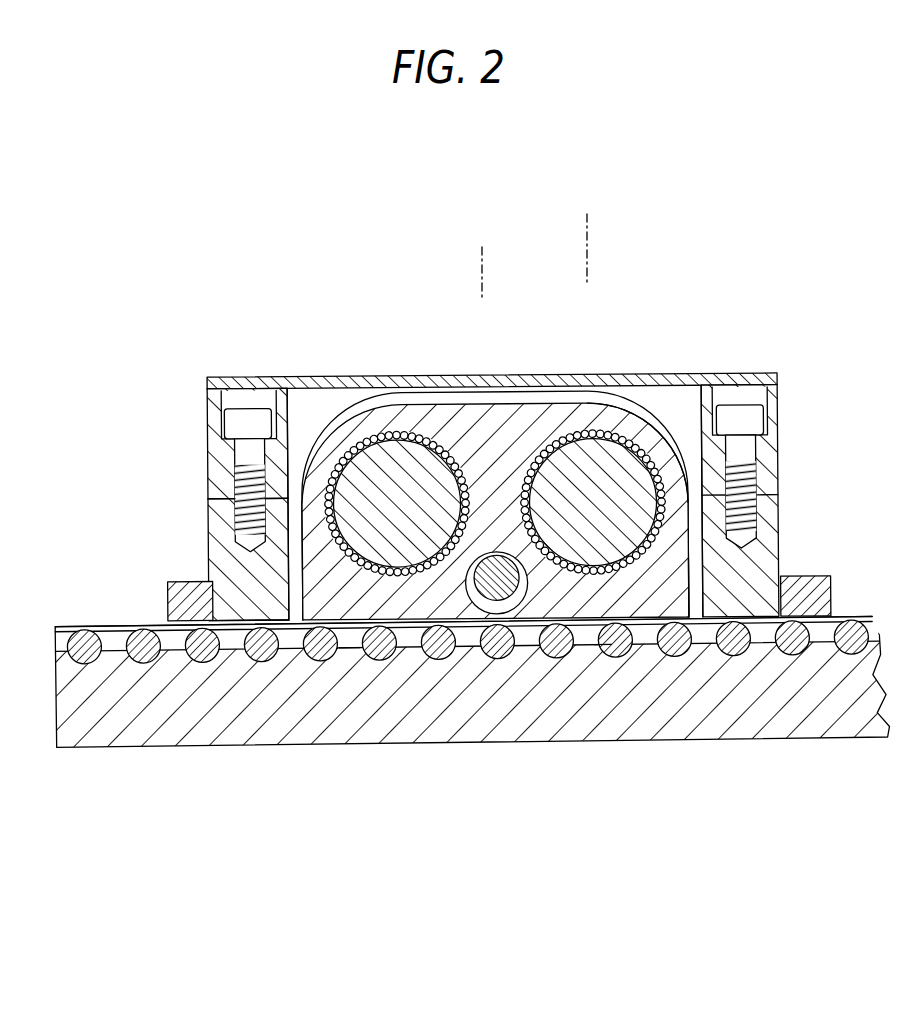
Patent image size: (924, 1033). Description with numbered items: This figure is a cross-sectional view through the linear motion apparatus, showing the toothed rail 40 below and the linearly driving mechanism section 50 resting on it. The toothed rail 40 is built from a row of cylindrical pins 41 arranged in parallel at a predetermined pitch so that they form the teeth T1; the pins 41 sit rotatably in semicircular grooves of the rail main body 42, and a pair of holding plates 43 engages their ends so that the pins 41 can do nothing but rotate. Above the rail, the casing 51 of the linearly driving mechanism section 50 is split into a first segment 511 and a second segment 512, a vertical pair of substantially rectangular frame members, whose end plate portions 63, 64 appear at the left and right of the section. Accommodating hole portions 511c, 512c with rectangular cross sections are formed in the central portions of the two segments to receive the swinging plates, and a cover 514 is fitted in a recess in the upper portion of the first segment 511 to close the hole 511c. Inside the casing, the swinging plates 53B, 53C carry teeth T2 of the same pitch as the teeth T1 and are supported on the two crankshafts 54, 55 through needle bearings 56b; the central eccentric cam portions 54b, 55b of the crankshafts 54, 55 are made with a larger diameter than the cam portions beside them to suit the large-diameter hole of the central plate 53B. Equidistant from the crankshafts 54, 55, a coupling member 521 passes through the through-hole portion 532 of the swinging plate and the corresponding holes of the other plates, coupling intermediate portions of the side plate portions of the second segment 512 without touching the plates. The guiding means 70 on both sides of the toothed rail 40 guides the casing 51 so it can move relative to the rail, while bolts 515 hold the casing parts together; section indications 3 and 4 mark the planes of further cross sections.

The toothed rail 40 is at (470, 666).
The cylindrical pins 41 is at (100, 627).
The rail main body 42 is at (155, 745).
The holding plates 43 is at (122, 624).
The linearly driving mechanism section 50 is at (474, 532).
The casing 51 is at (474, 541).
The first segment 511 is at (213, 467).
The accommodating hole portion 511c is at (282, 378).
The second segment 512 is at (213, 523).
The accommodating hole portion 512c is at (297, 577).
The cover 514 is at (316, 377).
The fixing bolt 515 is at (245, 420).
The coupling member 521 is at (496, 560).
The through-hole portion 532 is at (488, 614).
The swinging plate 53B is at (506, 415).
The swinging plate 53C is at (676, 405).
The crankshaft 54 is at (593, 452).
The central eccentric cam portion 54b is at (608, 517).
The crankshaft 55 is at (397, 458).
The central eccentric cam portion 55b is at (412, 517).
The needle bearing 56b is at (330, 435).
The end plate portion 63 is at (210, 535).
The end plate portion 64 is at (780, 507).
The guiding means 70 is at (168, 588).
The teeth T1 is at (640, 606).
The teeth T2 is at (348, 652).
The section line 3- 3 is at (482, 247).
The section line 4- 4 is at (587, 214).